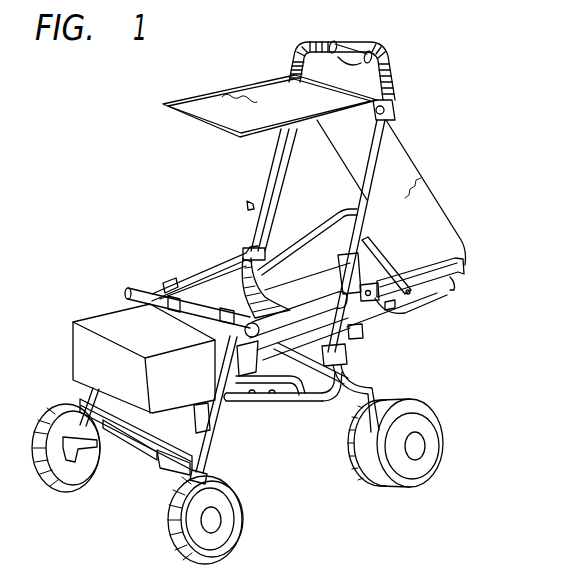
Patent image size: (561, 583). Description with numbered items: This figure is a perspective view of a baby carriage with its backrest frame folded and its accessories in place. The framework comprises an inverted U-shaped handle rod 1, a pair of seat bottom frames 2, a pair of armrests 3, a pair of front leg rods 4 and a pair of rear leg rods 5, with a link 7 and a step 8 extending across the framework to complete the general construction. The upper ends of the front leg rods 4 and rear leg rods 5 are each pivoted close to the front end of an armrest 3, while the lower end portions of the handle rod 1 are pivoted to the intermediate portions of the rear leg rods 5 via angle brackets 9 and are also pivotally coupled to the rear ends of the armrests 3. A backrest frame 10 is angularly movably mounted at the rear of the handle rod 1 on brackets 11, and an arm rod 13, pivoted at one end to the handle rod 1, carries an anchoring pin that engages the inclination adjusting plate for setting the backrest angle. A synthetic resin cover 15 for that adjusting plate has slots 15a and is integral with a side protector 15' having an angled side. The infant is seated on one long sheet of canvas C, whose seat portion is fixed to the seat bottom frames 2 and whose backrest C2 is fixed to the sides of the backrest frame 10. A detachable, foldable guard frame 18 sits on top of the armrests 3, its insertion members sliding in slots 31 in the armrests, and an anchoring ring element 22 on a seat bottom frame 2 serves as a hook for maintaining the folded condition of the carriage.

The handle rod 1 is at (397, 70).
The seat bottom frames 2 is at (230, 404).
The armrests 3 is at (212, 268).
The front leg rods 4 is at (90, 392).
The rear leg rods 5 is at (366, 393).
The link 7 is at (322, 405).
The step 8 is at (163, 465).
The angle brackets 9 is at (338, 361).
The backrest frame 10 is at (412, 308).
The brackets 11 is at (363, 333).
The arm rod 13 is at (382, 266).
The cover 15 is at (412, 261).
The side protector 15' is at (307, 232).
The slots 15a is at (452, 290).
The guard frame 18 is at (174, 282).
The anchoring ring element 22 is at (194, 423).
The slots 31 is at (217, 370).
The canvas C is at (318, 301).
The backrest C2 is at (383, 323).